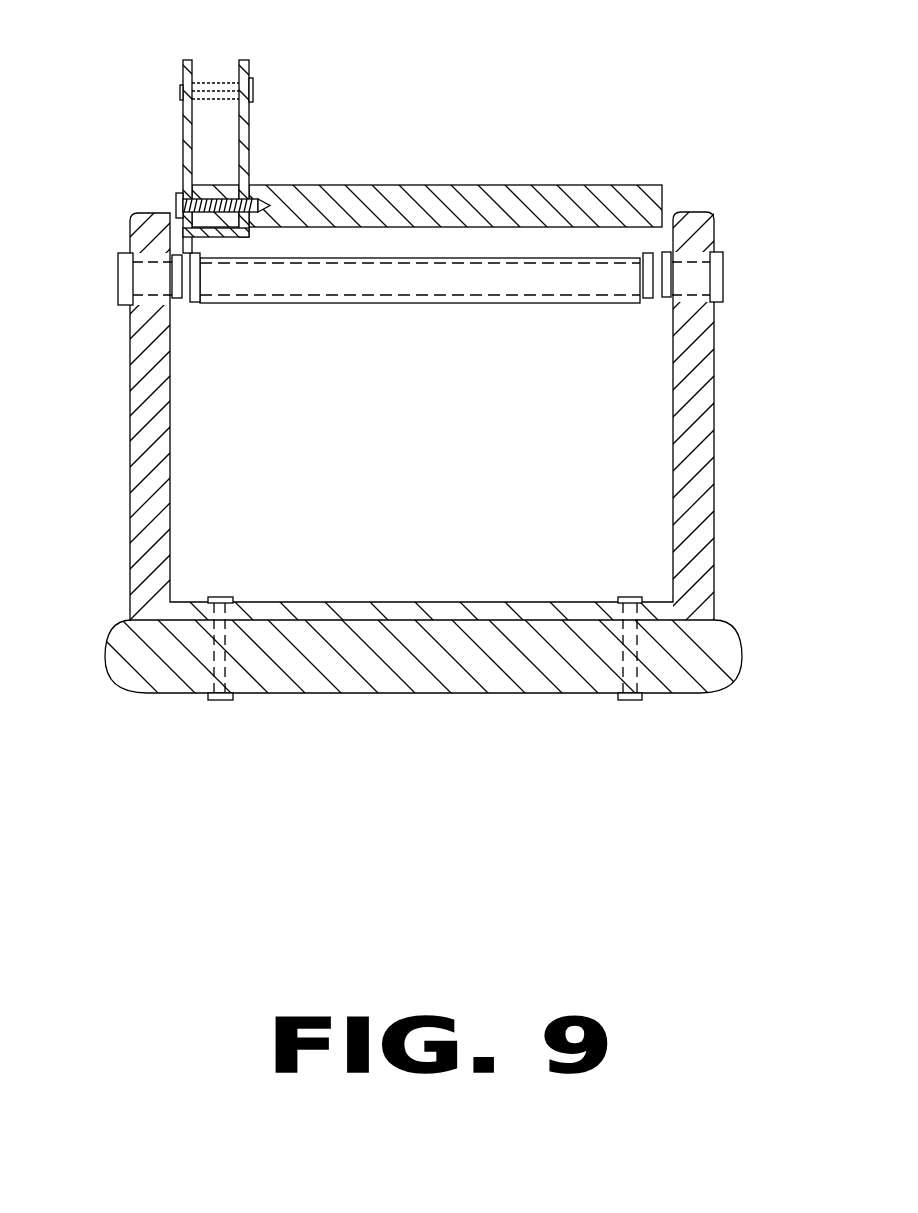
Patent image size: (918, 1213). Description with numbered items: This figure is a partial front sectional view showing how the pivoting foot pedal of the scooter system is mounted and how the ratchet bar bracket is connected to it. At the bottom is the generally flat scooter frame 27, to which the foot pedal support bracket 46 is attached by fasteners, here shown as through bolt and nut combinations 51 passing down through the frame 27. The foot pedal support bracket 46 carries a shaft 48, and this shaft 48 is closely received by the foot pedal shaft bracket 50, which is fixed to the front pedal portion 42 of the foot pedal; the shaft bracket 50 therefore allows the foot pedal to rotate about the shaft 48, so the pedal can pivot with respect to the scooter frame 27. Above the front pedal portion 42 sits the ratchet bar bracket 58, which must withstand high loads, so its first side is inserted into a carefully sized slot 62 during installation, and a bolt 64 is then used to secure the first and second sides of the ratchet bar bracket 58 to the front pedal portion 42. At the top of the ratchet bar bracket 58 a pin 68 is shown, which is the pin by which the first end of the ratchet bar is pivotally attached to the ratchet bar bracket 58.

The frame 27 is at (393, 655).
The front pedal portion 42 is at (517, 185).
The foot pedal support bracket 46 is at (130, 385).
The shaft 48 is at (723, 280).
The foot pedal shaft bracket 50 is at (252, 305).
The through bolt and nut combinations 51 is at (218, 598).
The ratchet bar bracket 58 is at (251, 168).
The slot 62 is at (242, 186).
The bolt 64 is at (178, 205).
The pin 68 is at (180, 90).